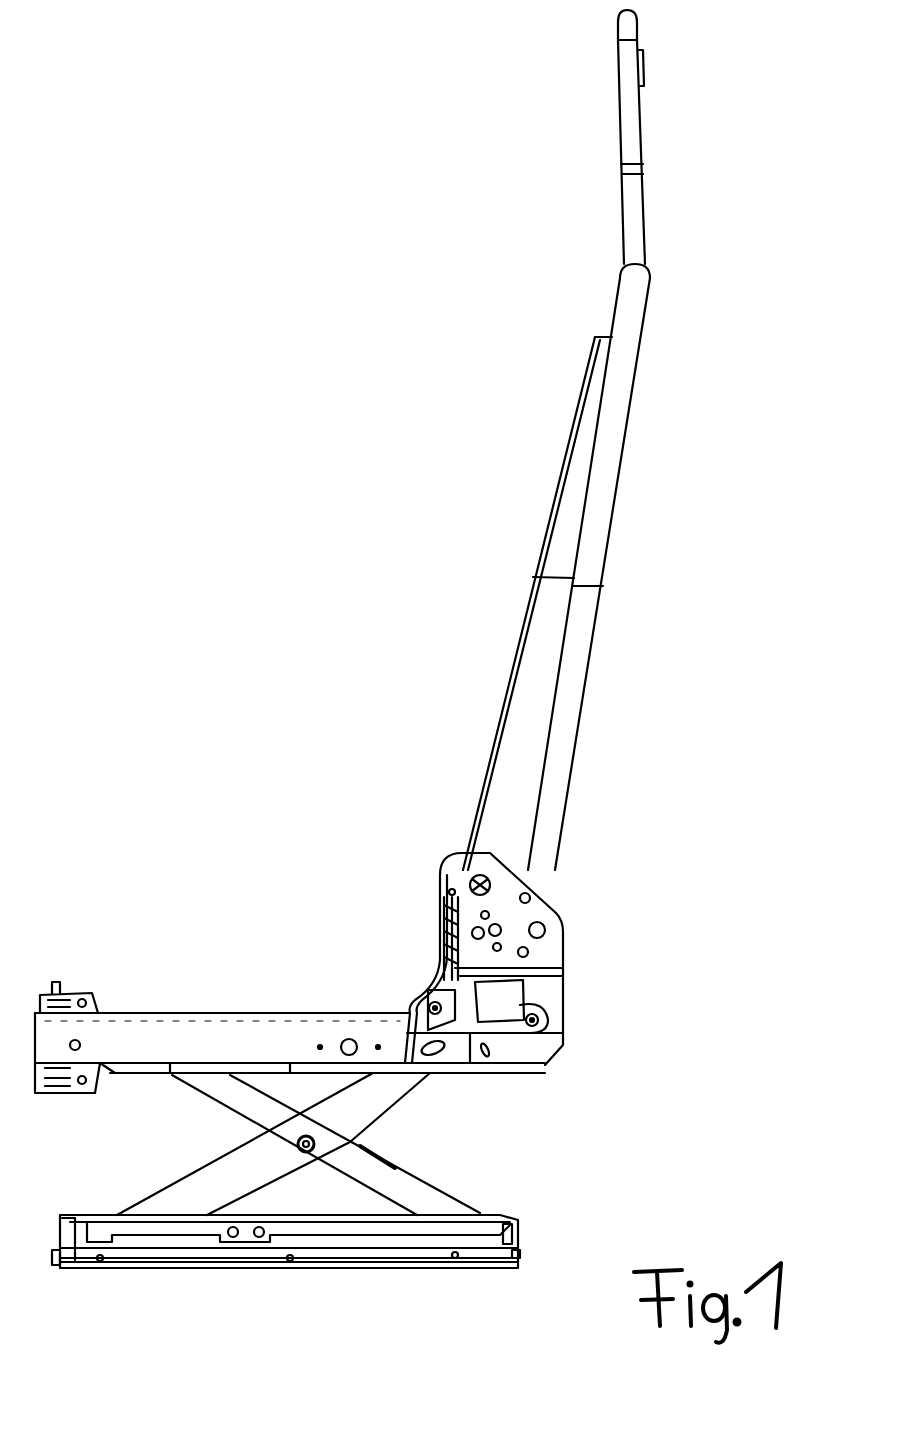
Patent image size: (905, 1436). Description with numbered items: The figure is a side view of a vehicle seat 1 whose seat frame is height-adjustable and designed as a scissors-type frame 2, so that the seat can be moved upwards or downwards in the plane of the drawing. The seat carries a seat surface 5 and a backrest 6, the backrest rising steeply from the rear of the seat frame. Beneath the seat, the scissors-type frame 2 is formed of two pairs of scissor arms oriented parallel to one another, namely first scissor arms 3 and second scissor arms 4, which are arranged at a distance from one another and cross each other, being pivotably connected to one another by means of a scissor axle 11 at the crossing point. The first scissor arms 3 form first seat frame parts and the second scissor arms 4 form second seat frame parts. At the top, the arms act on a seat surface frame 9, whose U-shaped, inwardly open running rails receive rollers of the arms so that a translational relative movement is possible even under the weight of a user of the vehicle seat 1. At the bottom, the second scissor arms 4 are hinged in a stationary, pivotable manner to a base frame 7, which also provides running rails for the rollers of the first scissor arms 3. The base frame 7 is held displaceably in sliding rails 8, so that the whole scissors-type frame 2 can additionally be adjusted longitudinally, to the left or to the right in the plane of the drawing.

The vehicle seat 1 is at (194, 396).
The scissors-type frame 2 is at (520, 1137).
The first scissor arms 3 is at (424, 1194).
The second scissor arms 4 is at (193, 1190).
The seat surface 5 is at (243, 1036).
The backrest 6 is at (517, 733).
The base frame 7 is at (528, 1228).
The sliding rails 8 is at (518, 1255).
The seat surface frame 9 is at (146, 1036).
The scissor axle 11 is at (316, 1144).